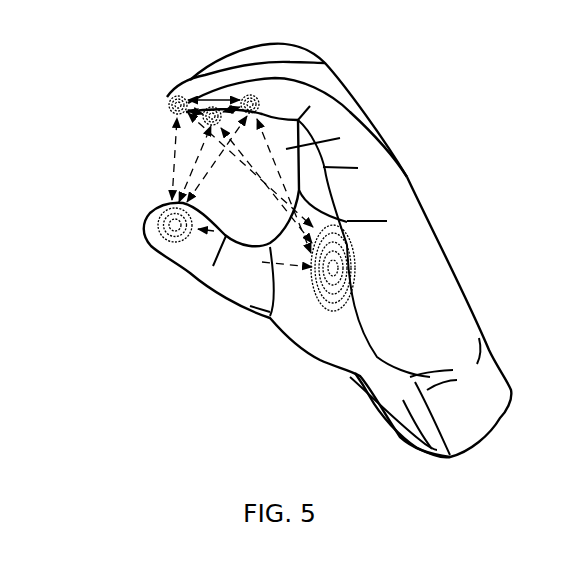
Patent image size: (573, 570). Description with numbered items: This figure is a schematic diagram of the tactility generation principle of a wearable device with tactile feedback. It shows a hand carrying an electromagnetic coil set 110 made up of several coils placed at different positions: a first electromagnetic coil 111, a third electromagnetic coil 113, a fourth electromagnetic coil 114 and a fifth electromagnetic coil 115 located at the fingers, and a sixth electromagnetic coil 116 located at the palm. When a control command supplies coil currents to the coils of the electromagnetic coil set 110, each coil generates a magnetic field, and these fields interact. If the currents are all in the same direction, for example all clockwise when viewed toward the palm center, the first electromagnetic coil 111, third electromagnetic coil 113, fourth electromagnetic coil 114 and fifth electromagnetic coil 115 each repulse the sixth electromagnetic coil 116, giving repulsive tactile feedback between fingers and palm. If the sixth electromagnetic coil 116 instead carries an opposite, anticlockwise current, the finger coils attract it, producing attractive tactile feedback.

The electromagnetic coil set 110 is at (240, 352).
The first electromagnetic coil 111 is at (164, 212).
The third electromagnetic coil 113 is at (176, 96).
The fourth electromagnetic coil 114 is at (212, 105).
The fifth electromagnetic coil 115 is at (256, 109).
The sixth electromagnetic coil 116 is at (325, 307).